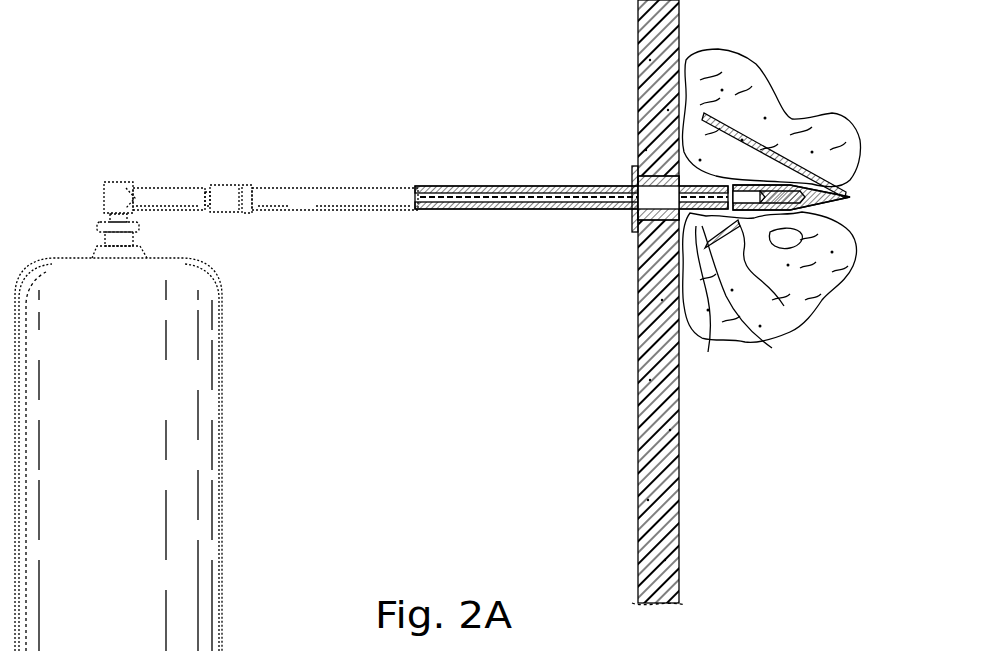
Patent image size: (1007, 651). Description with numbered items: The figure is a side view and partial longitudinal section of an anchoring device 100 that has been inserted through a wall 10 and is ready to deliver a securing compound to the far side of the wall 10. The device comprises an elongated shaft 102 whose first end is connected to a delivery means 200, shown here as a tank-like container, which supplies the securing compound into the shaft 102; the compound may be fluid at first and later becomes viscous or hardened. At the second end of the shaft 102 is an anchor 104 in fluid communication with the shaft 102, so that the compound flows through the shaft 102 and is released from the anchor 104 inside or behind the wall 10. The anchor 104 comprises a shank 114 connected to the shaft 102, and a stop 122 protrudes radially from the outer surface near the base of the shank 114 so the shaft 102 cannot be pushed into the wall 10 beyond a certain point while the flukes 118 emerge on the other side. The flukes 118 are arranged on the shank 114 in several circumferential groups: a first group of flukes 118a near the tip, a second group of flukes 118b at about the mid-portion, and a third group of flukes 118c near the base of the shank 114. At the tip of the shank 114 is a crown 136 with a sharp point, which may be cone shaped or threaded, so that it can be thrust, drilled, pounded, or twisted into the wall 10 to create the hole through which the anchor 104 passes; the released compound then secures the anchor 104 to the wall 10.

The wall 10 is at (638, 470).
The anchoring device 100 is at (463, 116).
The elongated shaft 102 is at (334, 186).
The anchor 104 is at (855, 199).
The shank 114 is at (636, 236).
The flukes 118 is at (766, 132).
The first group of flukes 118a is at (819, 299).
The second group of flukes 118b is at (777, 344).
The third group of flukes 118c is at (710, 344).
The stop 122 is at (636, 170).
The crown 136 is at (845, 186).
The delivery means 200 is at (222, 512).